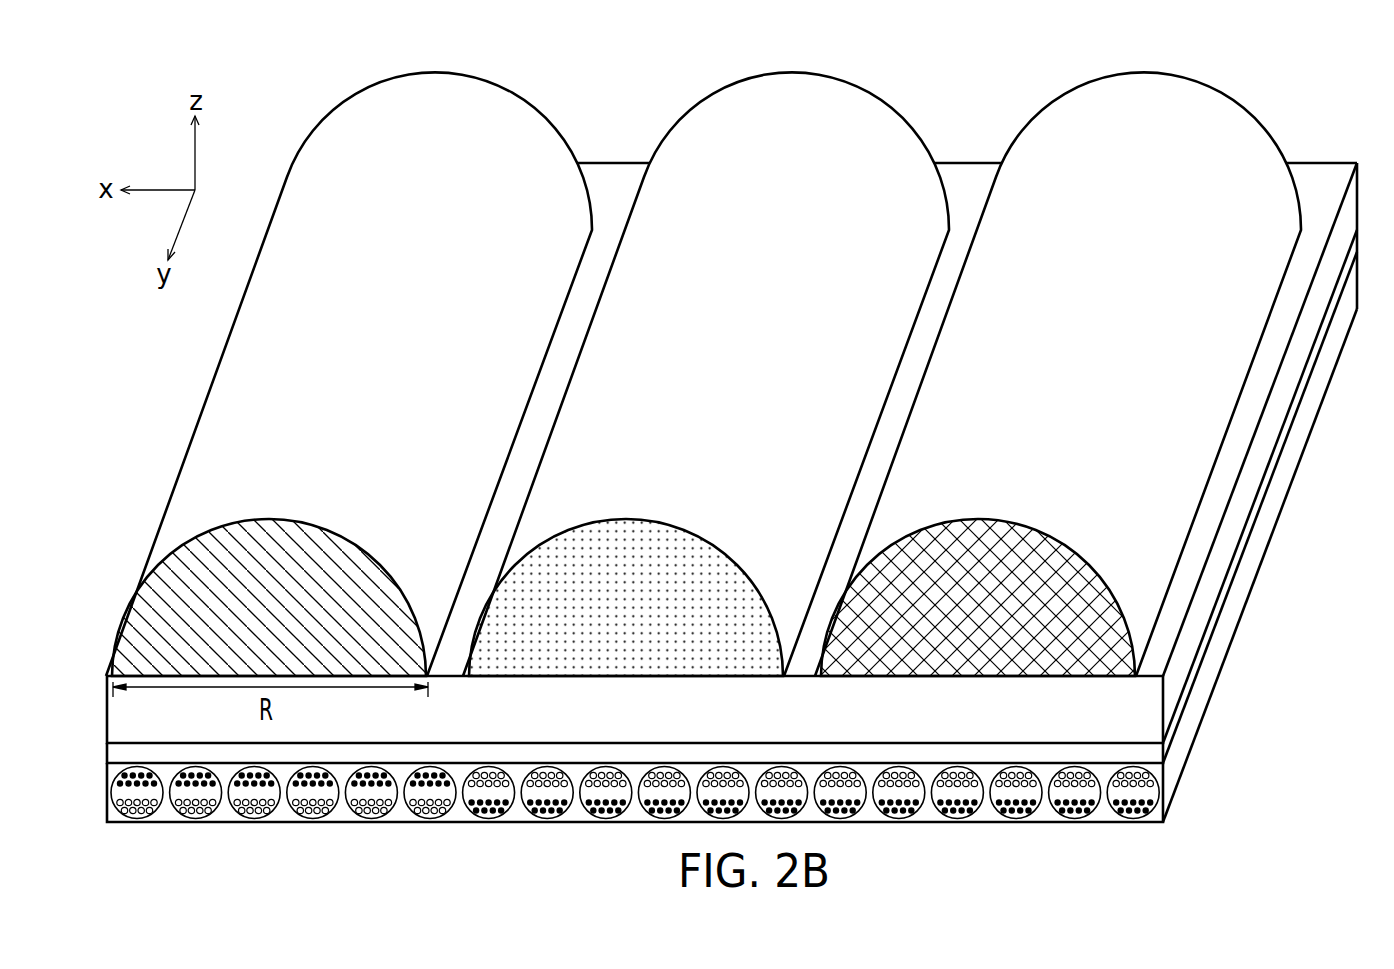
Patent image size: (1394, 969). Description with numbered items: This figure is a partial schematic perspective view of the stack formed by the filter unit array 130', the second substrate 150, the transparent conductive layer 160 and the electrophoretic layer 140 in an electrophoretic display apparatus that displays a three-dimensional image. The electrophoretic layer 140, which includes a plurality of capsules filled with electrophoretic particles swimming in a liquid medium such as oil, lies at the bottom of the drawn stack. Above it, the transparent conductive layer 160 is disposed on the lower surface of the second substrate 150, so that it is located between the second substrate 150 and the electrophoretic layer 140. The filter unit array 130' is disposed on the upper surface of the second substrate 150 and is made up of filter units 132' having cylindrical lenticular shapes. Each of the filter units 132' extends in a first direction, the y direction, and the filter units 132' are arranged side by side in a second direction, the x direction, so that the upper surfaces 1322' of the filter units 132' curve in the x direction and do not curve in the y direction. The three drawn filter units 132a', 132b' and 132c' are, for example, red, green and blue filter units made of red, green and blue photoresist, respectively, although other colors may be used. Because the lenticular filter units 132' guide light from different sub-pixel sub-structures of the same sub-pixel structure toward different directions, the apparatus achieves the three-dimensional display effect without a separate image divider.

The filter unit array 130' is at (748, 440).
The upper surface 1322' is at (378, 374).
The filter units 132' is at (703, 374).
The red filter unit 132a' is at (378, 374).
The green filter unit 132b' is at (706, 374).
The blue filter unit 132c' is at (1058, 374).
The second substrate 150 is at (1146, 716).
The transparent conductive layer 160 is at (1147, 752).
The electrophoretic layer 140 is at (1167, 795).